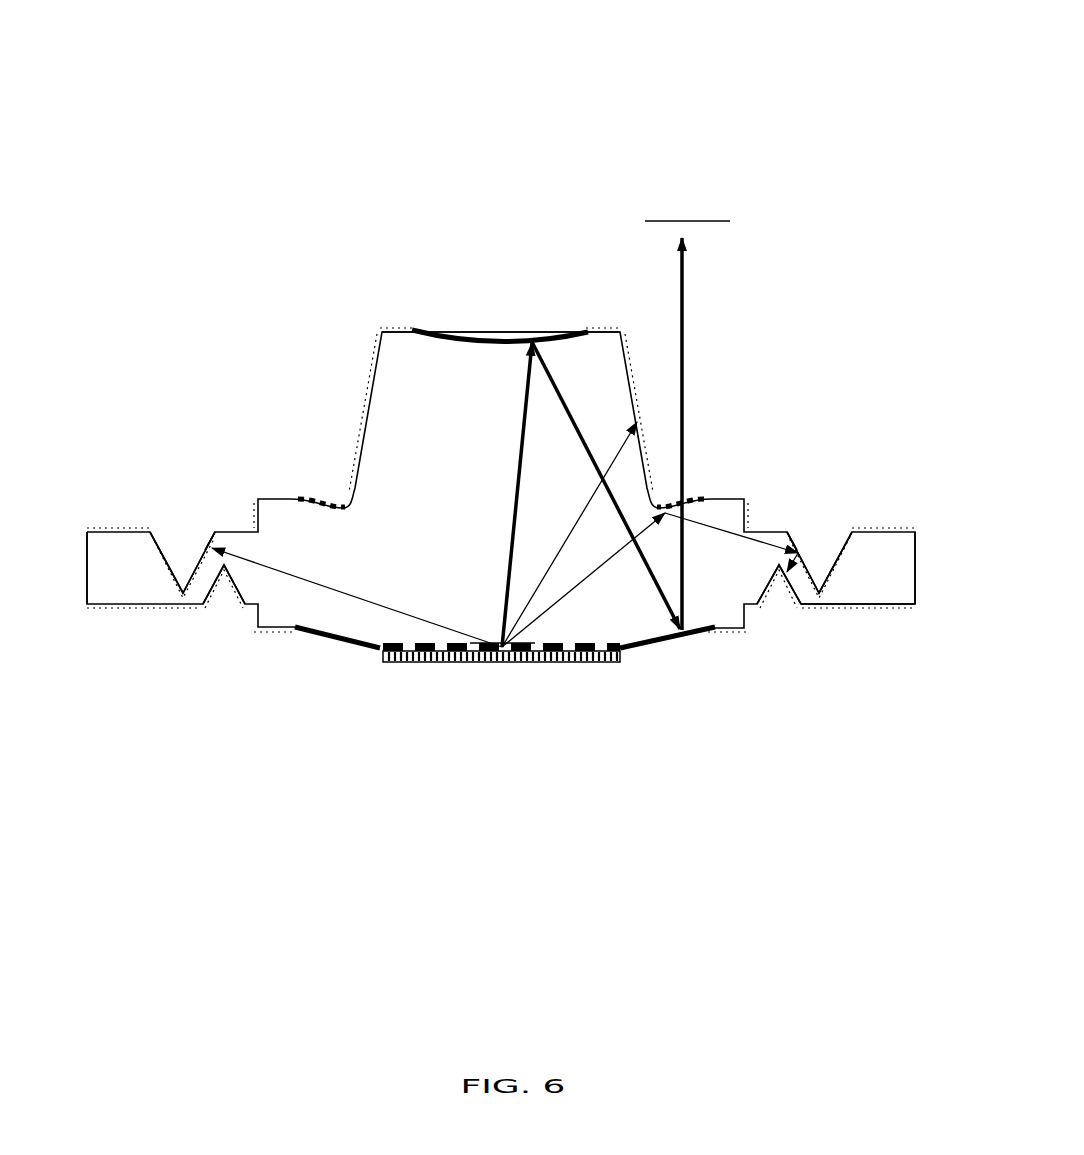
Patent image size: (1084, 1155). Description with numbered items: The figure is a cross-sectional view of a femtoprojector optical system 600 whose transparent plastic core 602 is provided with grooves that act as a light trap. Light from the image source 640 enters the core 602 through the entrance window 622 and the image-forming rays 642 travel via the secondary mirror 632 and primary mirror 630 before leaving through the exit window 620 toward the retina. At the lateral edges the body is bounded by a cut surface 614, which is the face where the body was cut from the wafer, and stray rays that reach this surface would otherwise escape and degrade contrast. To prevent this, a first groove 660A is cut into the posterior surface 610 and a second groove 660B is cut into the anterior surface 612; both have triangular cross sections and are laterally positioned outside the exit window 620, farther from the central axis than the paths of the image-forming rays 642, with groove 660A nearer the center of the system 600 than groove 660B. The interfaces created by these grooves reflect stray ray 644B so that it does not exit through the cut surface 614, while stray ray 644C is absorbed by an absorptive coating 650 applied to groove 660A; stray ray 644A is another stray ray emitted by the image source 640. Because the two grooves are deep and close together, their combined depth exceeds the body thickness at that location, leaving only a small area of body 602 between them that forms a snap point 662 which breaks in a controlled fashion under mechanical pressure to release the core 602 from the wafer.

The femtoprojector optical system 600 is at (316, 103).
The core 602 is at (421, 512).
The posterior surface 610 is at (746, 489).
The anterior surface 612 is at (908, 613).
The cut surface 614 is at (82, 562).
The exit window 620 is at (753, 355).
The entrance window 622 is at (489, 636).
The primary mirror 630 is at (368, 654).
The secondary mirror 632 is at (439, 329).
The image source 640 is at (460, 670).
The image-forming rays 642 is at (554, 364).
The stray ray 644A is at (533, 602).
The stray ray 644B is at (576, 595).
The stray ray 644C is at (330, 595).
The absorptive coating 650 is at (198, 544).
The groove 660A is at (819, 548).
The groove 660B is at (775, 595).
The snap point 662 is at (199, 586).